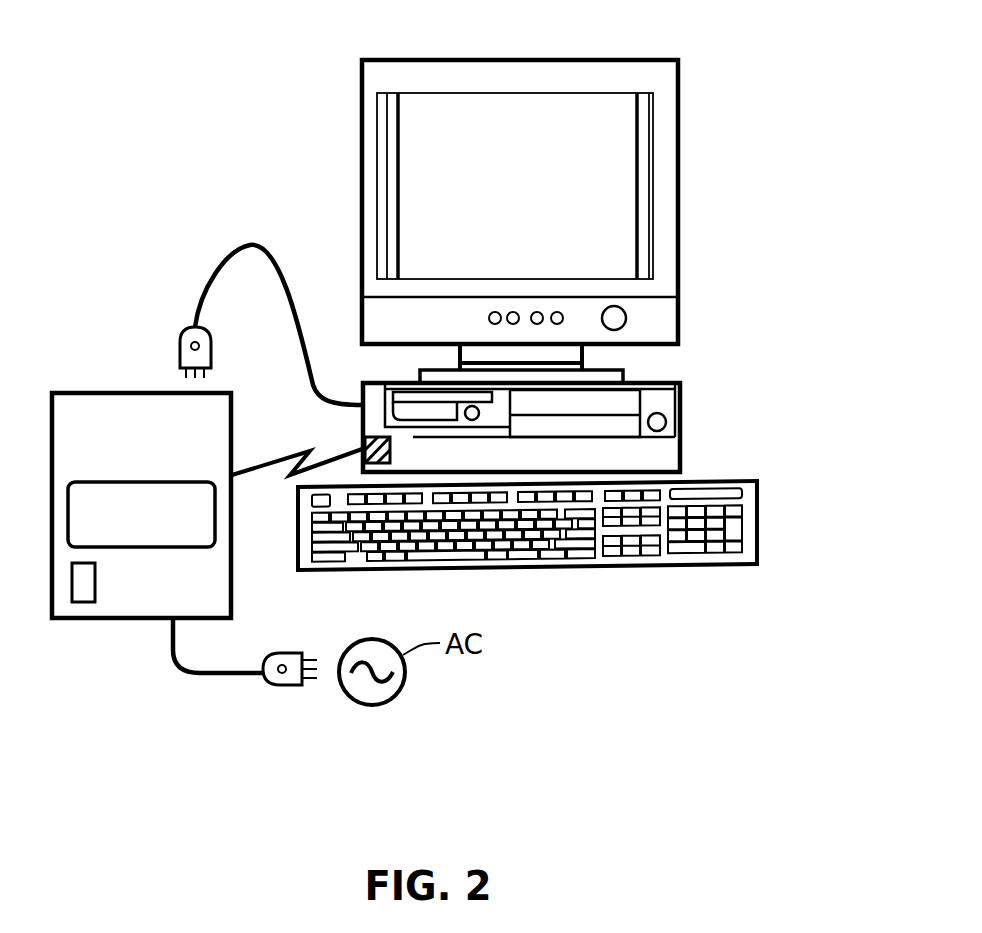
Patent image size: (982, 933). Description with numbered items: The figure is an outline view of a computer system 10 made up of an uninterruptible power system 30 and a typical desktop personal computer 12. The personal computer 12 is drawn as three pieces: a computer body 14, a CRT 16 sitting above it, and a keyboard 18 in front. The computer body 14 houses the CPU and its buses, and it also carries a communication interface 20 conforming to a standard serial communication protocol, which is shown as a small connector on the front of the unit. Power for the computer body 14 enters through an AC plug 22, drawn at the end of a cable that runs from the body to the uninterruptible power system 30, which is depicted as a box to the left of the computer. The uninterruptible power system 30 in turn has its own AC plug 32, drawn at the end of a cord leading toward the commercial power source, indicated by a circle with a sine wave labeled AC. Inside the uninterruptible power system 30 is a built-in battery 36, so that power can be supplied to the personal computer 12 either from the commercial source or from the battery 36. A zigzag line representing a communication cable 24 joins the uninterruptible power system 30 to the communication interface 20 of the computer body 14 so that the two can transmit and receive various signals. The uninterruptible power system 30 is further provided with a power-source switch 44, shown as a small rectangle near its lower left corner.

The computer system 10 is at (220, 123).
The personal computer 12 is at (712, 253).
The computer body 14 is at (677, 407).
The CRT 16 is at (627, 59).
The keyboard 18 is at (758, 503).
The communication interface 20 is at (365, 440).
The AC plug 22 is at (183, 340).
The communication cable 24 is at (258, 476).
The uninterruptible power system 30 is at (110, 392).
The AC plug 32 is at (280, 686).
The battery 36 is at (138, 480).
The power-source switch 44 is at (95, 585).